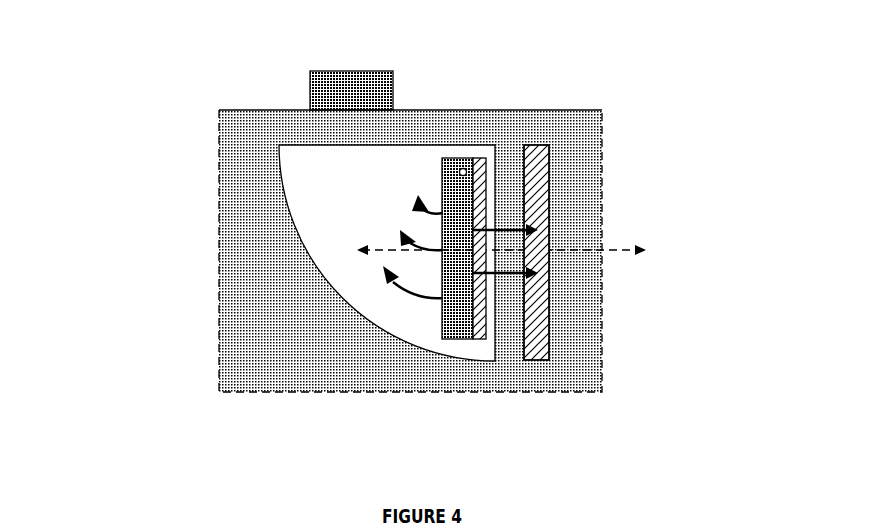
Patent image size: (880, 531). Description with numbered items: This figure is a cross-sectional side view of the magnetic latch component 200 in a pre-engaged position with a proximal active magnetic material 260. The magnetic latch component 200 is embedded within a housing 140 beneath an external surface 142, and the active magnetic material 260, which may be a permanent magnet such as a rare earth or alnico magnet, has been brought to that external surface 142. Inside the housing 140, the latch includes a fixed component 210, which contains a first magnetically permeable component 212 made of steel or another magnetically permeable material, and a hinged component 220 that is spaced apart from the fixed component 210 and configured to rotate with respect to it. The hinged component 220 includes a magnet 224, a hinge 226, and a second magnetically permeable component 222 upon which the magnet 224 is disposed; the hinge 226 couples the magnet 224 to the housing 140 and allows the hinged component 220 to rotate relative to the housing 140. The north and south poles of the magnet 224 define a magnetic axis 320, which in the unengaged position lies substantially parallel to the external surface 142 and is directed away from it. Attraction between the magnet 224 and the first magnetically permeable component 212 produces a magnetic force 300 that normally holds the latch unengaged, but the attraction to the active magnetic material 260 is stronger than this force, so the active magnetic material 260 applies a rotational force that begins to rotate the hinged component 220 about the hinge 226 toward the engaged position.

The magnetic latch component 200 is at (425, 240).
The housing 140 is at (587, 130).
The external surface 142 is at (512, 106).
The active magnetic material 260 is at (309, 82).
The hinge 226 is at (464, 168).
The fixed component 210 is at (668, 246).
The first magnetically permeable component 212 is at (540, 227).
The hinged component 220 is at (435, 315).
The second magnetically permeable component 222 is at (477, 330).
The magnet 224 is at (460, 328).
The magnetic force 300 is at (517, 276).
The magnetic axis 320 is at (618, 251).